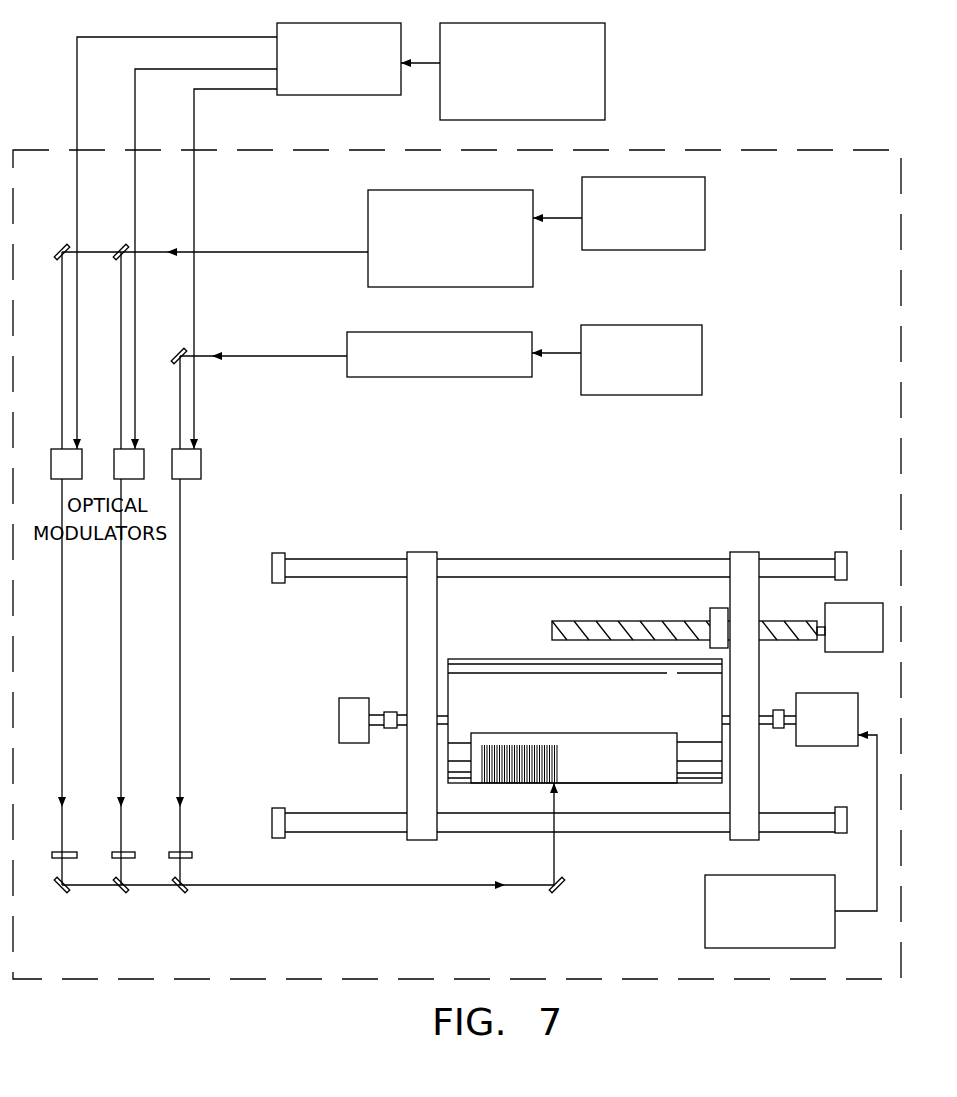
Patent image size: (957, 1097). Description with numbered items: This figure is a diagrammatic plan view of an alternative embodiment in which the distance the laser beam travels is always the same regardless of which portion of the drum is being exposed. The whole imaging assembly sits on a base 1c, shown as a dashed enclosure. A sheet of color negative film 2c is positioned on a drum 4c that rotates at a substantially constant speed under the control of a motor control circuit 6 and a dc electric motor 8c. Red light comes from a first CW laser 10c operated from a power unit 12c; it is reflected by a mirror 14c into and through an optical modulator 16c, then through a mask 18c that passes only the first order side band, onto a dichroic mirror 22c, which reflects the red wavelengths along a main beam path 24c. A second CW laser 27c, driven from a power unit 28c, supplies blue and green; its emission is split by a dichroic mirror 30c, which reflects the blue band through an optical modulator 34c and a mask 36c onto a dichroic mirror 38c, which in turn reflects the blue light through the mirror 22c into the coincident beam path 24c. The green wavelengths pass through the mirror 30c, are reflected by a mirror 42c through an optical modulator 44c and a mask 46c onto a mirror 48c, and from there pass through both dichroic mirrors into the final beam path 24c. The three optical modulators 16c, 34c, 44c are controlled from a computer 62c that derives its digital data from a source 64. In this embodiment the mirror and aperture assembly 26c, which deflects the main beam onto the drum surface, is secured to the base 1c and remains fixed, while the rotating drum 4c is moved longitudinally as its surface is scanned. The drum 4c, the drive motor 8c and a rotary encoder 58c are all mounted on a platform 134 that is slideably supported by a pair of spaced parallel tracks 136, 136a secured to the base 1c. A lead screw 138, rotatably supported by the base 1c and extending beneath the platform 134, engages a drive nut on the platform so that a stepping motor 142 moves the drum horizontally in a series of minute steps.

The base 1c is at (157, 979).
The sheet of color negative film 2c is at (517, 745).
The drum 4c is at (462, 659).
The motor control circuit 6 is at (746, 901).
The dc electric motor 8c is at (834, 721).
The first CW laser 10c is at (389, 368).
The power unit 12c is at (635, 349).
The mirror 14c is at (176, 348).
The optical modulator 16c is at (178, 449).
The mask 18c is at (181, 852).
The dichroic mirror 22c is at (185, 894).
The main beam path 24c is at (347, 887).
The mirror and aperture assembly 26c is at (556, 853).
The CW laser 27c is at (441, 219).
The power unit 28c is at (639, 204).
The dichroic mirror 30c is at (119, 245).
The optical modulator 34c is at (120, 449).
The mask 36c is at (121, 852).
The dichroic mirror 38c is at (127, 894).
The mirror 42c is at (58, 245).
The optical modulator 44c is at (60, 449).
The mask 46c is at (62, 852).
The mirror 48c is at (68, 894).
The rotary encoder 58c is at (349, 698).
The computer 62c is at (335, 57).
The source 64 is at (583, 56).
The platform 134 is at (428, 552).
The track 136 is at (318, 559).
The track 136a is at (309, 813).
The lead screw 138 is at (573, 621).
The stepping motor 142 is at (873, 636).